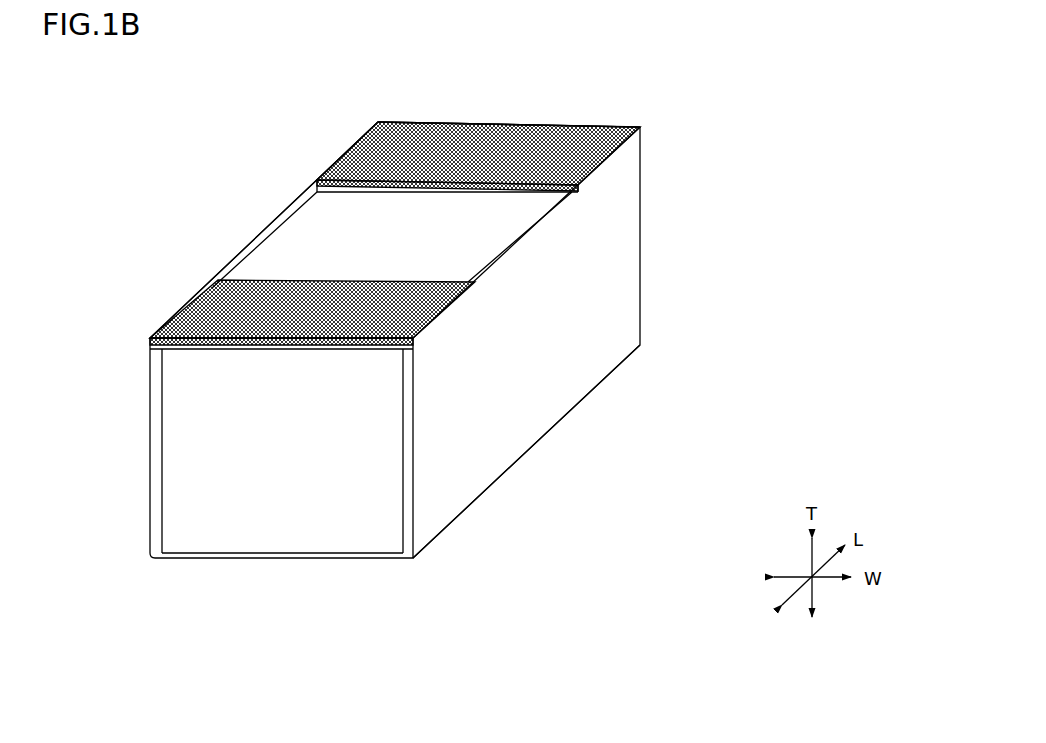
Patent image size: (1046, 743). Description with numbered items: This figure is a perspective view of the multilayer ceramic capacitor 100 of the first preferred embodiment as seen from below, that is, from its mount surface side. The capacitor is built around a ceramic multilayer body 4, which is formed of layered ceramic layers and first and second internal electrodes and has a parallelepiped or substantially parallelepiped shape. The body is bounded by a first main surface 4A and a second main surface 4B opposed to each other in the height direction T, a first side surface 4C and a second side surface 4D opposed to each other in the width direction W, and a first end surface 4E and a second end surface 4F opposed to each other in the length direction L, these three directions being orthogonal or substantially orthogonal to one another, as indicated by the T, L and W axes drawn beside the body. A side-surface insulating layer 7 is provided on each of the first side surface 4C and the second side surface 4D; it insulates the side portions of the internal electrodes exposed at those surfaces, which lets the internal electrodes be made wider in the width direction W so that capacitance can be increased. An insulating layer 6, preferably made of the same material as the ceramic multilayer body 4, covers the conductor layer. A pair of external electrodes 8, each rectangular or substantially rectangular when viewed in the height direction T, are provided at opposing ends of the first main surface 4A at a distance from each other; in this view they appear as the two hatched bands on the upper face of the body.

The multilayer ceramic capacitor 100 is at (158, 103).
The ceramic multilayer body 4 is at (313, 223).
The first main surface 4A is at (400, 222).
The second main surface 4B is at (475, 532).
The first side surface 4C is at (221, 258).
The second side surface 4D is at (538, 330).
The first end surface 4E is at (280, 452).
The second end surface 4F is at (528, 107).
The insulating layer 6 is at (242, 443).
The side-surface insulating layer 7 is at (282, 222).
The external electrode 8 is at (300, 315).